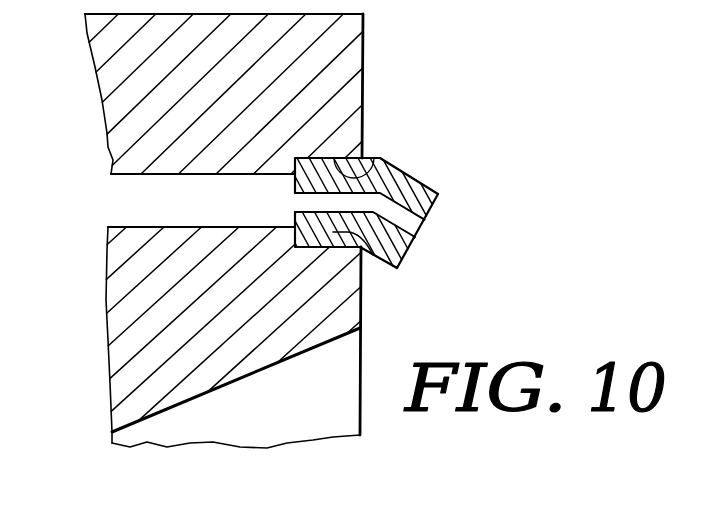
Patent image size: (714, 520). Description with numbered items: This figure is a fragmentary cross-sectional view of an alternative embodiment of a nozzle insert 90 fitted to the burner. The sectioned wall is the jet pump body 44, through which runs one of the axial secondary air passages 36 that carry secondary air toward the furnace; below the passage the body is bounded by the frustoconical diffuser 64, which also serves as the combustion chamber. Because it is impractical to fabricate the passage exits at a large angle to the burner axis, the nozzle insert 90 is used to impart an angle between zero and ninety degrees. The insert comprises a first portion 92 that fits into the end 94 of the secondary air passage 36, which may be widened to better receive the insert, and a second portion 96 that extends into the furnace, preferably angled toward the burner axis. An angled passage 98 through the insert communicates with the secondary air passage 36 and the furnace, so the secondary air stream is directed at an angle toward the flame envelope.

The jet pump body 44 is at (163, 62).
The secondary air passage 36 is at (177, 193).
The frustoconical diffuser 64 is at (303, 412).
The nozzle insert 90 is at (399, 216).
The first portion 92 is at (373, 255).
The end of passage 94 is at (375, 158).
The second portion 96 is at (398, 182).
The angled passage 98 is at (428, 233).